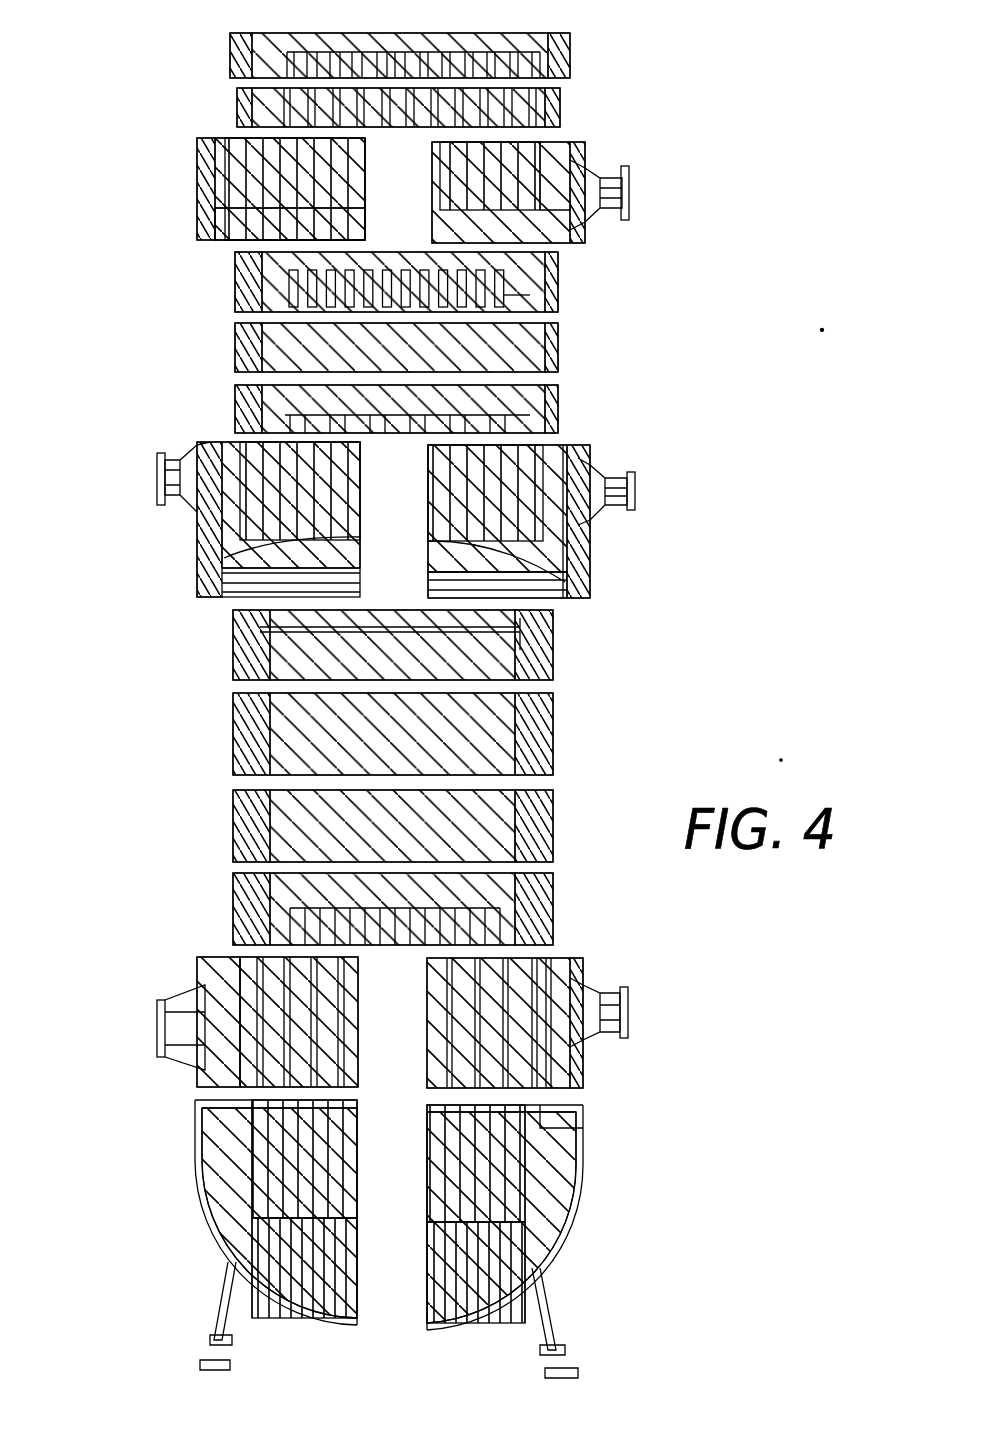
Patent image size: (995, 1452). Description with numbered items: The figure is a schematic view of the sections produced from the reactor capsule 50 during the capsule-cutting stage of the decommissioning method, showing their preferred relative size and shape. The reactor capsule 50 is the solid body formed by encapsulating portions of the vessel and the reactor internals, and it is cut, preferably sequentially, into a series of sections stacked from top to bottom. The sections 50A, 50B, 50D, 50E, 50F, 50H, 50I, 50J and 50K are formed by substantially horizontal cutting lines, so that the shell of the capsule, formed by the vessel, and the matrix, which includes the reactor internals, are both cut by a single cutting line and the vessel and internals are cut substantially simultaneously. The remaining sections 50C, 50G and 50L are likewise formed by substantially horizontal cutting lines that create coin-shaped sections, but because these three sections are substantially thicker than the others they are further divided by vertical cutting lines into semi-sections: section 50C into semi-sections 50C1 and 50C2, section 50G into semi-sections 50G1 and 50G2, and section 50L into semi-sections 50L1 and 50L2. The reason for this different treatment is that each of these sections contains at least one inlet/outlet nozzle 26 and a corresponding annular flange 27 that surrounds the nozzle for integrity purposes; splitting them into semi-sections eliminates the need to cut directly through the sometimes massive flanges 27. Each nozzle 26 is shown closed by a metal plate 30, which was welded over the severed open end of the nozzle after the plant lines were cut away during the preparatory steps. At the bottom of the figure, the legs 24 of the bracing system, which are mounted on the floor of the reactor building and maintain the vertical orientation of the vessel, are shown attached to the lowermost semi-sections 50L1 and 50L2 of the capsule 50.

The reactor capsule 50 is at (586, 718).
The section 50A is at (230, 45).
The section 50B is at (235, 103).
The section 50C is at (196, 176).
The semi-section 50C1 is at (197, 208).
The semi-section 50C2 is at (588, 226).
The section 50D is at (233, 280).
The section 50E is at (233, 340).
The section 50F is at (233, 400).
The section 50G is at (597, 537).
The semi-section 50G1 is at (200, 575).
The semi-section 50G2 is at (595, 578).
The section 50H is at (232, 655).
The section 50I is at (232, 746).
The section 50J is at (232, 822).
The section 50K is at (232, 905).
The section 50L is at (183, 1065).
The semi-section 50L1 is at (193, 1073).
The semi-section 50L2 is at (588, 1092).
The inlet/outlet nozzle 26 is at (588, 168).
The flange 27 is at (598, 180).
The metal plate 30 is at (630, 192).
The legs 24 is at (214, 1310).